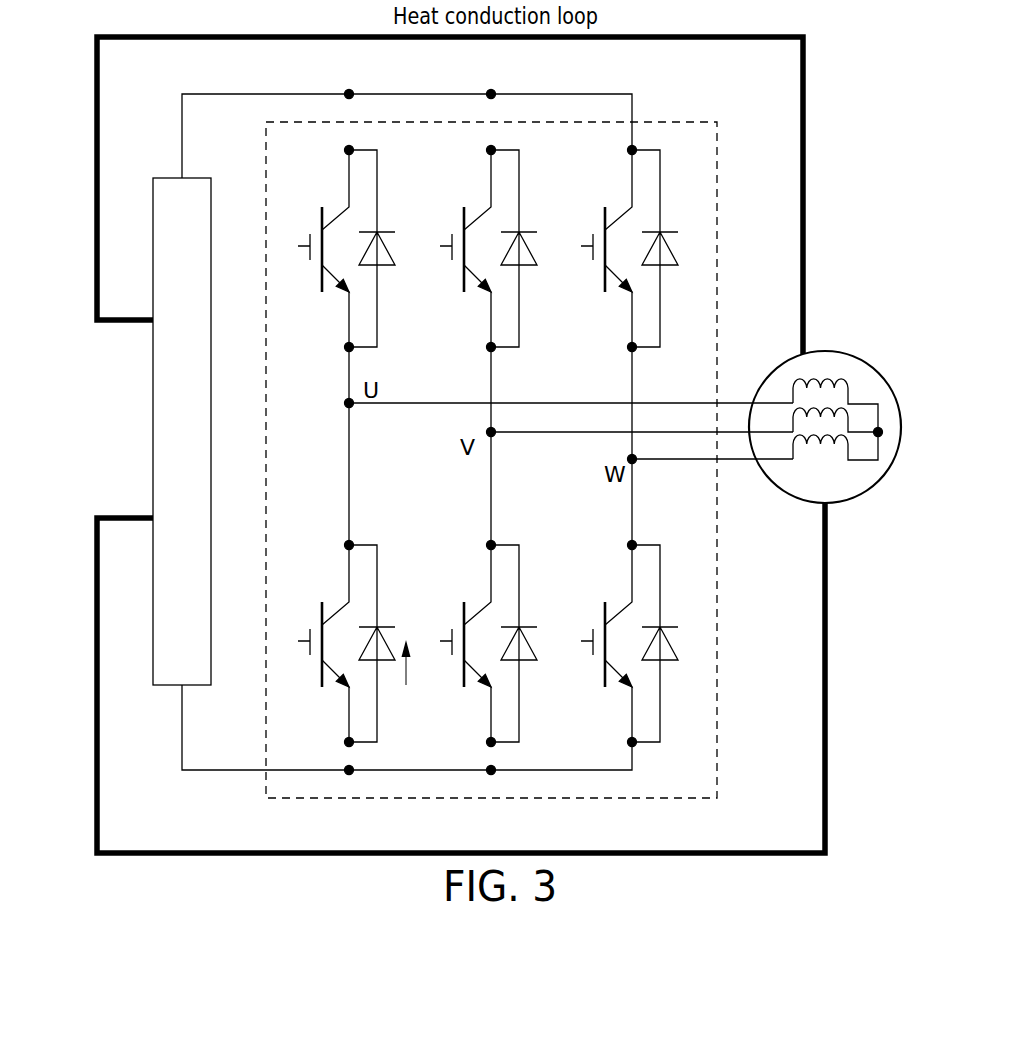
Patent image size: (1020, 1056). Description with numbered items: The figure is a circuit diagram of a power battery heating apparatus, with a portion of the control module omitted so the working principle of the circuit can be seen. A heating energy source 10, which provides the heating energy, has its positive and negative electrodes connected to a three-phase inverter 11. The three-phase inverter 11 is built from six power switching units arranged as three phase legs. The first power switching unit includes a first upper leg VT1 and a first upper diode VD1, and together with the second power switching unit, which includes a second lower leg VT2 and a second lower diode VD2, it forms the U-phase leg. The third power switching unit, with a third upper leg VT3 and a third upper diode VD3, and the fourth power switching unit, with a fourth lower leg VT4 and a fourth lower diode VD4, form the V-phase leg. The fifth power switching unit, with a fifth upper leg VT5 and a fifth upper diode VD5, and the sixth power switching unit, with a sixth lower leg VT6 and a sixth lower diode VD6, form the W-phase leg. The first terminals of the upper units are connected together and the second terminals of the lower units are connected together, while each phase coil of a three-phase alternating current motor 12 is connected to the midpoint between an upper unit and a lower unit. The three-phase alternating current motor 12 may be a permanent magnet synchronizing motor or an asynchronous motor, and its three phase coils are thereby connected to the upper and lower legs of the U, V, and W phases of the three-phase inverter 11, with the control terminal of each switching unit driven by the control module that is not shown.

The heating energy source 10 is at (199, 178).
The three-phase inverter 11 is at (517, 460).
The three-phase alternating current motor 12 is at (821, 349).
The first upper leg VT1 is at (311, 248).
The second lower leg VT2 is at (316, 643).
The third upper leg VT3 is at (464, 248).
The fourth lower leg VT4 is at (465, 643).
The fifth upper leg VT5 is at (606, 248).
The sixth lower leg VT6 is at (604, 643).
The first upper diode VD1 is at (386, 249).
The second lower diode VD2 is at (387, 644).
The third upper diode VD3 is at (530, 249).
The fourth lower diode VD4 is at (529, 644).
The fifth upper diode VD5 is at (669, 249).
The sixth lower diode VD6 is at (670, 644).